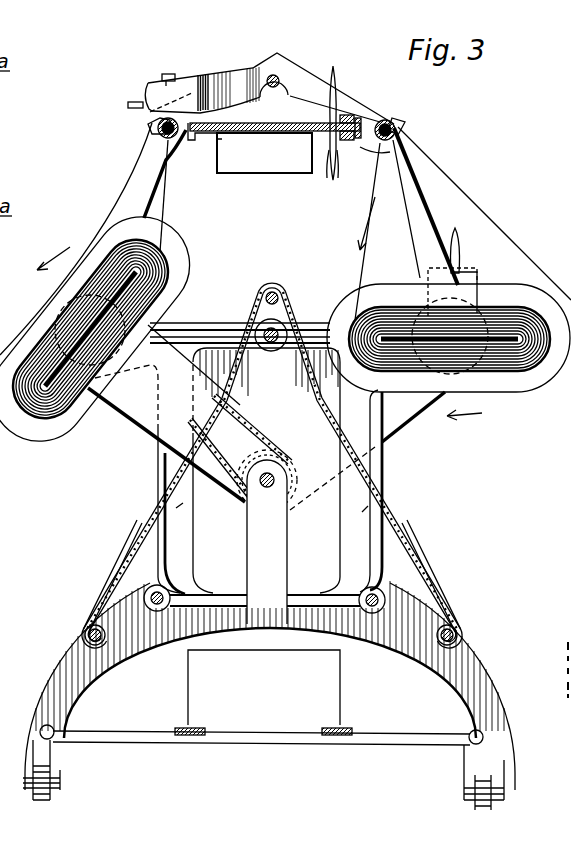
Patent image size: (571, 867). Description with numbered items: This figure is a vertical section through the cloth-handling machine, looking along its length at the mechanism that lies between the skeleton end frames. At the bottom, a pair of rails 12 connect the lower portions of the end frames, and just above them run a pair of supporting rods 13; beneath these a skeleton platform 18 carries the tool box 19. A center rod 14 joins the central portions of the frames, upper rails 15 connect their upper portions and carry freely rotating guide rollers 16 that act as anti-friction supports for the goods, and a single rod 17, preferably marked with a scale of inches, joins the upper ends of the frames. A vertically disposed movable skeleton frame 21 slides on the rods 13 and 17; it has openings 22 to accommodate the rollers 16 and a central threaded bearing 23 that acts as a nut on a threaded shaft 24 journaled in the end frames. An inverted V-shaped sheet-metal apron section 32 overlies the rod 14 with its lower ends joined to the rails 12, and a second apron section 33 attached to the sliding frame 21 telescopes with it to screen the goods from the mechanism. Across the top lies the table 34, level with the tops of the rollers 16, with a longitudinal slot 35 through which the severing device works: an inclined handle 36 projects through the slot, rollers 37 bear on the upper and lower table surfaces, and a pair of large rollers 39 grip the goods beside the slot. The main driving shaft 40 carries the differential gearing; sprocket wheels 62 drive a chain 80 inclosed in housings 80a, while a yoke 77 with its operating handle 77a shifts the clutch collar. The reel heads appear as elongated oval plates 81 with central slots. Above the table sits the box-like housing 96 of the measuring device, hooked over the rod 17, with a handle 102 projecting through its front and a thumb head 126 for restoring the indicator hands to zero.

The rails 12 is at (88, 627).
The supporting rods 13 is at (150, 596).
The center rod 14 is at (273, 292).
The upper rails 15 is at (155, 127).
The guide rollers 16 is at (165, 148).
The rod 17 is at (275, 74).
The skeleton platform 18 is at (200, 740).
The tool box 19 is at (264, 687).
The movable skeleton frame 21 is at (115, 205).
The openings 22 is at (157, 124).
The threaded bearing 23 is at (271, 351).
The threaded shaft 24 is at (261, 296).
The apron section 32 is at (178, 506).
The second apron section 33 is at (145, 540).
The table 34 is at (230, 105).
The slot 35 is at (346, 115).
The handle 36 is at (333, 66).
The rollers 37 is at (333, 160).
The large rollers 39 is at (312, 114).
The shaft 40 is at (272, 490).
The sprocket wheels 62 is at (279, 462).
The yoke 77 is at (480, 272).
The operating handle 77a is at (460, 240).
The chain 80 is at (233, 471).
The housings 80a is at (145, 440).
The oval plate 81 is at (35, 428).
The box-like housing 96 is at (187, 86).
The handle 102 is at (134, 102).
The thumb head 126 is at (165, 73).